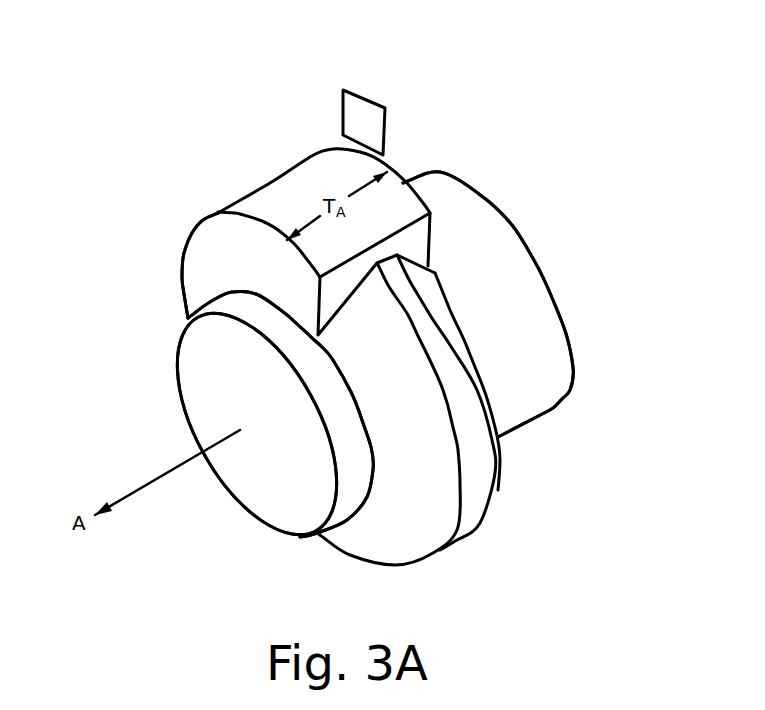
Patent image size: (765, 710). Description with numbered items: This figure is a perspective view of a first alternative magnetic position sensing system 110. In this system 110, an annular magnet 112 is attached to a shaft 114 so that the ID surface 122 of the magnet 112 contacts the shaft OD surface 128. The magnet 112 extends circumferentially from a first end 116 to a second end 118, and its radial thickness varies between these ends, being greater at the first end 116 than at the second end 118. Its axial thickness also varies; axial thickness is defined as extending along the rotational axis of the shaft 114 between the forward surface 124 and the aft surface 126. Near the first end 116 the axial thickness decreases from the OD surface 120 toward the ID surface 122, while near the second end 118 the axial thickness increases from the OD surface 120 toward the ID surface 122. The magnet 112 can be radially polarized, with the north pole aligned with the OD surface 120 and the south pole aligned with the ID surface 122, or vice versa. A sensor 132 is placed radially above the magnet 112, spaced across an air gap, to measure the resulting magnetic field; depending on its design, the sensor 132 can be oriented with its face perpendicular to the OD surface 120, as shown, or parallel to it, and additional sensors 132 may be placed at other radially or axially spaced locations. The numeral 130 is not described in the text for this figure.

The alternative system 110 is at (565, 100).
The annular magnet 112 is at (173, 250).
The shaft 114 is at (537, 418).
The first end 116 is at (411, 238).
The second end 118 is at (437, 272).
The OD surface 120 is at (267, 203).
The ID surface 122 is at (377, 478).
The forward surface 124 is at (215, 260).
The aft surface 126 is at (393, 173).
The shaft OD surface 128 is at (348, 490).
The front face 130 is at (192, 433).
The sensor 132 is at (328, 113).